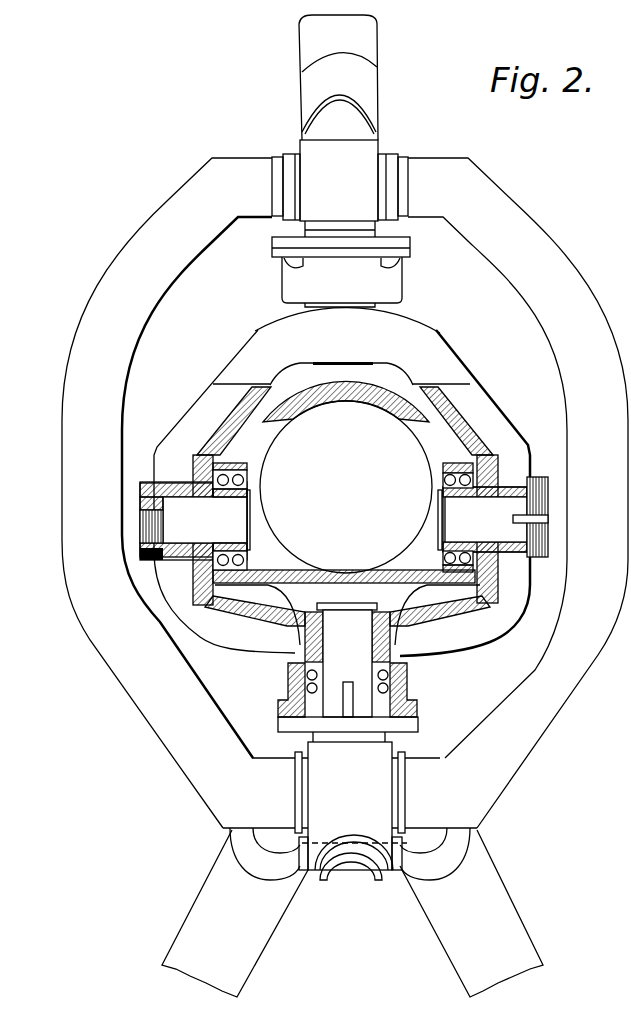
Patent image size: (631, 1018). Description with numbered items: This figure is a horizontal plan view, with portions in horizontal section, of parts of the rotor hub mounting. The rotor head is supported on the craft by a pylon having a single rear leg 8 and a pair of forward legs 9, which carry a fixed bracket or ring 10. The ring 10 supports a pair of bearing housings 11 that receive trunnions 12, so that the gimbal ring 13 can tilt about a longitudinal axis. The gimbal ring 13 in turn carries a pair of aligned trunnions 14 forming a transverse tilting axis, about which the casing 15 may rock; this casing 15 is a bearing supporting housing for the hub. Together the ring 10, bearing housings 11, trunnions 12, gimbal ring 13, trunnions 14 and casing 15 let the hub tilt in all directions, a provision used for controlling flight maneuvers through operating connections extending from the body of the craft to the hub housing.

The rear leg 8 is at (372, 43).
The forward legs 9 is at (178, 937).
The fixed bracket or ring 10 is at (75, 410).
The bearing housings 11 is at (388, 285).
The trunnions 12 is at (335, 645).
The gimbal ring 13 is at (463, 600).
The aligned trunnions 14 is at (200, 548).
The casing 15 is at (298, 406).